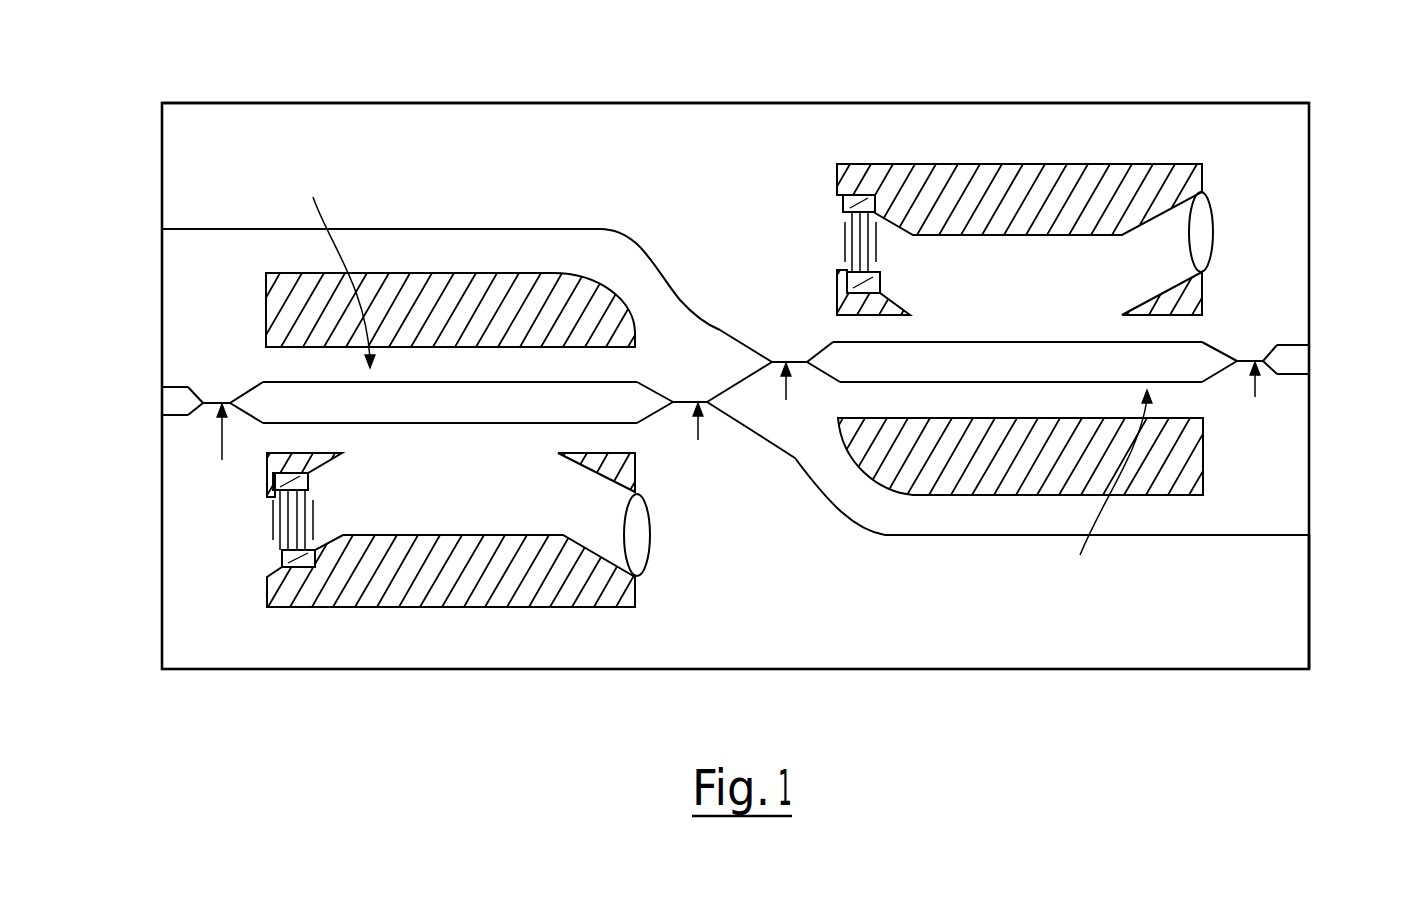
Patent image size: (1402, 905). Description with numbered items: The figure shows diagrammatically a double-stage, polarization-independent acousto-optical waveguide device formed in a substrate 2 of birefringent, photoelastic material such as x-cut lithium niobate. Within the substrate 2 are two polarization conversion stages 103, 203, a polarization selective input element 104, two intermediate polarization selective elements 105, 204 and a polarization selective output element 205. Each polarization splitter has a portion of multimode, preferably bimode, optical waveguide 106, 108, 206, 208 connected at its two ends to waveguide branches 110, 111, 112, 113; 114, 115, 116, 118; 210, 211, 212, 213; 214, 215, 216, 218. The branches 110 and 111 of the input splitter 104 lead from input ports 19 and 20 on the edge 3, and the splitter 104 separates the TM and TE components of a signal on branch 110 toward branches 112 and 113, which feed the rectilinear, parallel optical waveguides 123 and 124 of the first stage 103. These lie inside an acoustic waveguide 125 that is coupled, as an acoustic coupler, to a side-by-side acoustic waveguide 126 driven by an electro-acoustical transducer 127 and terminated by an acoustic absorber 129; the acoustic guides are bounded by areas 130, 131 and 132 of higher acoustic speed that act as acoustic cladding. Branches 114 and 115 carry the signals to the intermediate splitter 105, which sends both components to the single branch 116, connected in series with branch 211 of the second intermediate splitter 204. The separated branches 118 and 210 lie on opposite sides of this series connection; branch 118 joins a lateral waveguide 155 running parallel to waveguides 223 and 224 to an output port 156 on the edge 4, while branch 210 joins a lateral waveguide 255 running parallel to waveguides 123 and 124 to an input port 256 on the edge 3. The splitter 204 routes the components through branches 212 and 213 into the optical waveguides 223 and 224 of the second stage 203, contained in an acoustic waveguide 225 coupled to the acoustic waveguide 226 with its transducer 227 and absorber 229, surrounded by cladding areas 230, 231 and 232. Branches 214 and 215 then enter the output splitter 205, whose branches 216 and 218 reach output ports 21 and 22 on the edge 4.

The substrate 2 is at (695, 163).
The edge of the substrate 3 is at (162, 178).
The edge of the substrate 4 is at (1309, 583).
The input port 19 is at (162, 387).
The input port 20 is at (162, 415).
The output port 21 is at (1309, 345).
The output port 22 is at (1298, 374).
The polarization conversion stage 103 is at (335, 268).
The polarization selective input element 104 is at (219, 444).
The intermediate polarization selective element 105 is at (702, 442).
The portion of multimode optical waveguide 106 is at (222, 401).
The portion of multimode optical waveguide 108 is at (690, 400).
The optical waveguide branch 110 is at (177, 386).
The optical waveguide branch 111 is at (197, 418).
The optical waveguide branch 112 is at (253, 381).
The optical waveguide branch 113 is at (252, 425).
The optical waveguide branch 114 is at (660, 381).
The optical waveguide branch 115 is at (652, 425).
The optical waveguide branch 116 is at (737, 380).
The optical waveguide branch 118 is at (746, 430).
The optical waveguide 123 is at (418, 383).
The optical waveguide 124 is at (447, 424).
The acoustic waveguide 125 is at (465, 382).
The acoustic waveguide 126 is at (484, 554).
The electro-acoustical transducer 127 is at (298, 522).
The acoustic absorber 129 is at (633, 552).
The area of higher acoustic speed 130 is at (470, 278).
The area of higher acoustic speed 131 is at (500, 597).
The area of higher acoustic speed 132 is at (340, 455).
The lateral waveguide 155 is at (880, 537).
The output port 156 is at (1309, 535).
The polarization conversion stage 203 is at (1106, 490).
The intermediate polarization selective element 204 is at (789, 402).
The polarization selective output element 205 is at (1252, 396).
The portion of multimode optical waveguide 206 is at (787, 360).
The portion of multimode optical waveguide 208 is at (1247, 359).
The optical waveguide branch 210 is at (753, 345).
The optical waveguide branch 211 is at (760, 437).
The optical waveguide branch 212 is at (818, 360).
The optical waveguide branch 213 is at (822, 378).
The optical waveguide branch 214 is at (1232, 350).
The optical waveguide branch 215 is at (1223, 372).
The optical waveguide branch 216 is at (1273, 344).
The optical waveguide branch 218 is at (1285, 378).
The optical waveguide 223 is at (1078, 341).
The optical waveguide 224 is at (1147, 380).
The acoustic waveguide 225 is at (1040, 412).
The acoustic waveguide 226 is at (1049, 216).
The electro-acoustical transducer 227 is at (868, 248).
The acoustic absorber 229 is at (1212, 215).
The area of higher acoustic speed 230 is at (1007, 170).
The area of higher acoustic speed 231 is at (1065, 488).
The area of higher acoustic speed 232 is at (1180, 298).
The lateral waveguide 255 is at (527, 228).
The input port 256 is at (162, 229).